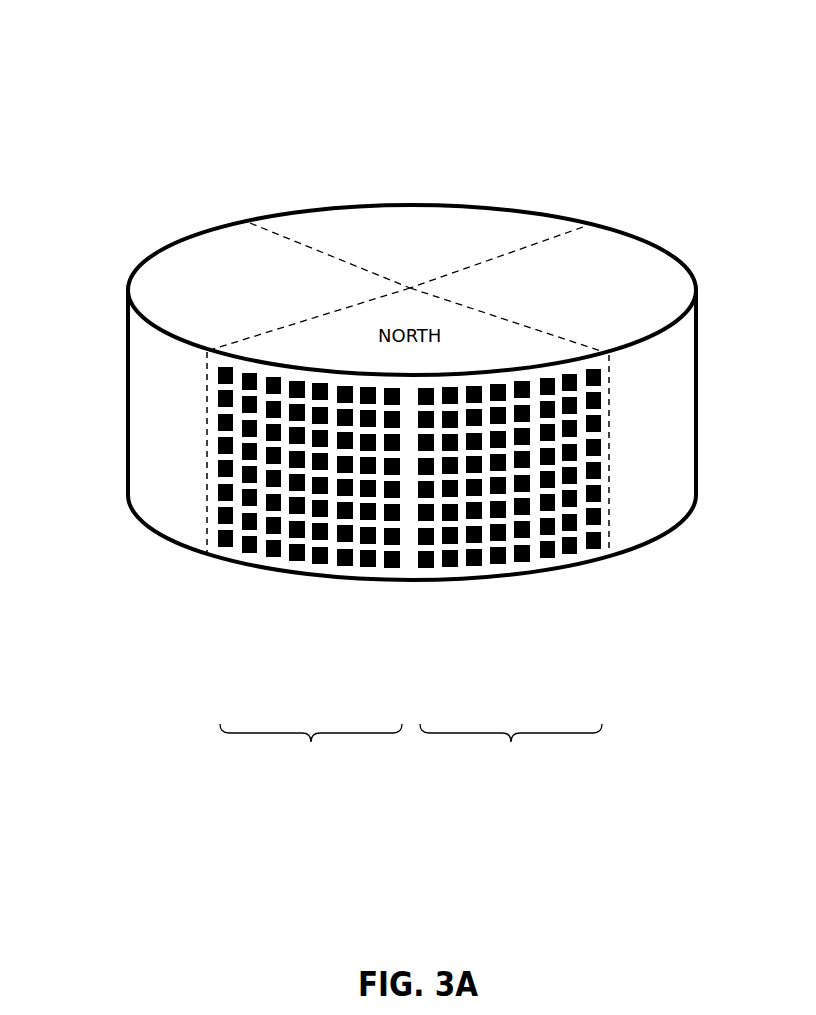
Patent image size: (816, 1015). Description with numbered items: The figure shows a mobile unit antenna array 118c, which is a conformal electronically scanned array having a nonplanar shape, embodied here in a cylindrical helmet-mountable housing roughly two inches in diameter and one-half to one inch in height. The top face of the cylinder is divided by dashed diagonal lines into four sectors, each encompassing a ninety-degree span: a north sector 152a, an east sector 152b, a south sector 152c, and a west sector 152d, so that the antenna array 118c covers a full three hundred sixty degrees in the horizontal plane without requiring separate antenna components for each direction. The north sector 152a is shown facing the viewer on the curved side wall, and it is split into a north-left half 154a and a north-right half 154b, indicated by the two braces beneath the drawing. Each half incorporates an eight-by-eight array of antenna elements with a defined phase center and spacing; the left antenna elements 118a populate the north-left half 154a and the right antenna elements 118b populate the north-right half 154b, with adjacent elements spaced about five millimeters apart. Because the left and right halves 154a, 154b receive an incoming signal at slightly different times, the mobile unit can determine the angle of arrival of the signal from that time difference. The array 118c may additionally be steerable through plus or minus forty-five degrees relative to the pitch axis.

The mobile unit antenna array 118c is at (100, 70).
The left antenna element 118a is at (228, 548).
The right antenna element 118b is at (593, 549).
The north sector 152a is at (408, 570).
The east sector 152b is at (219, 248).
The south sector 152c is at (433, 218).
The west sector 152d is at (623, 253).
The north-left half 154a is at (311, 756).
The north-right half 154b is at (511, 756).